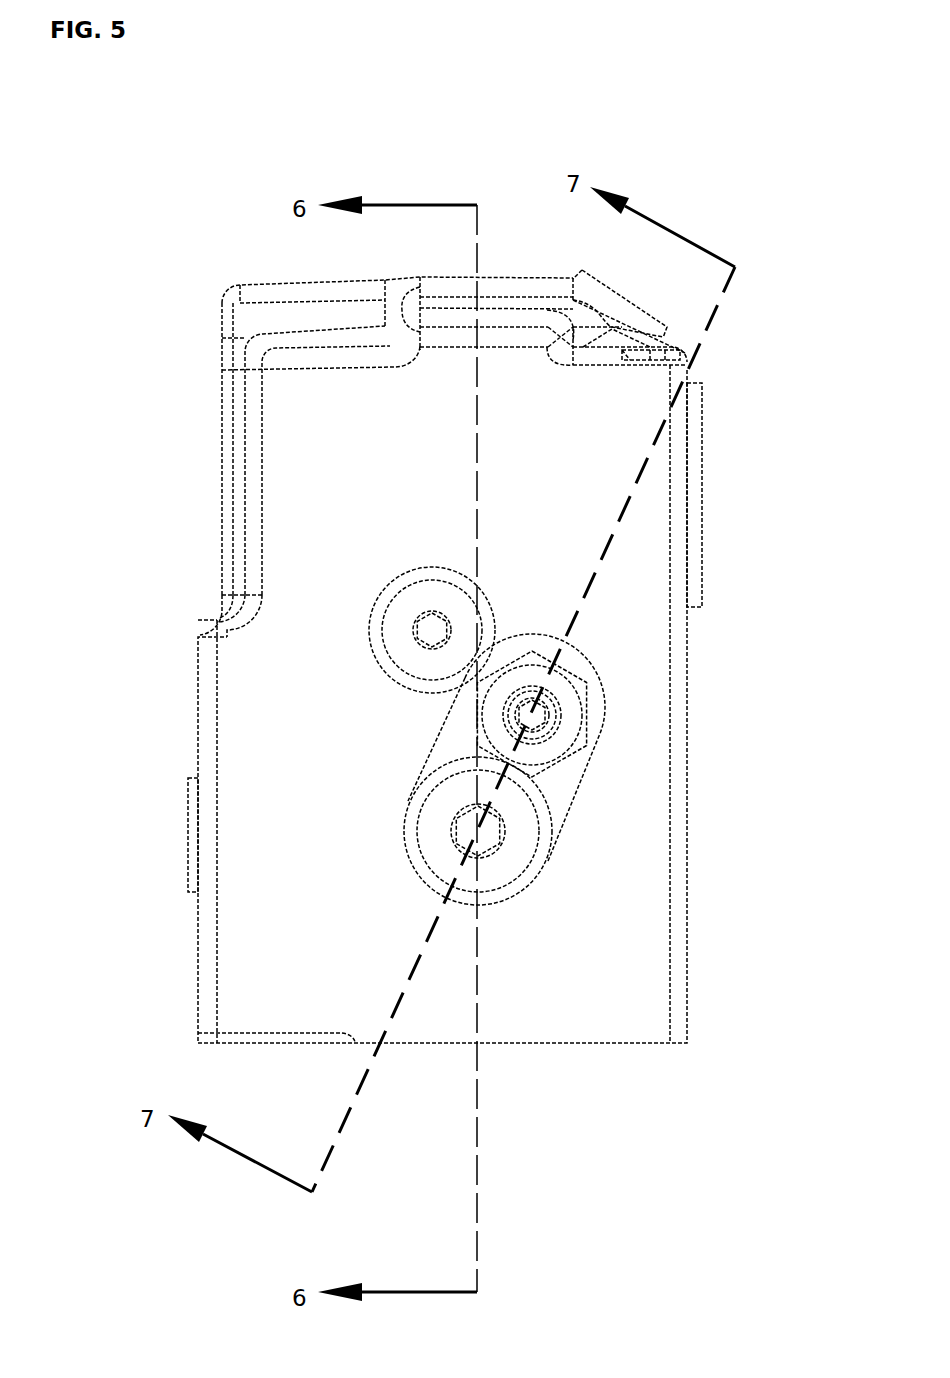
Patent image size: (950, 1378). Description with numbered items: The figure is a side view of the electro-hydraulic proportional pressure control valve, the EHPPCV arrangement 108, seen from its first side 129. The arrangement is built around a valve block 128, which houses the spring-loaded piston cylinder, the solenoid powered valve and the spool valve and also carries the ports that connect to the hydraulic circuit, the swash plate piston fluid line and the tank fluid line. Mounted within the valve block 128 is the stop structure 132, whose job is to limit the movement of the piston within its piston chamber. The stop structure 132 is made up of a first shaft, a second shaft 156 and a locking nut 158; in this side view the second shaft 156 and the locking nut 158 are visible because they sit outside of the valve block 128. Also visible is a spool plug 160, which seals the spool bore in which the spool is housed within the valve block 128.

The EHPPCV arrangement 108 is at (739, 91).
The valve block 128 is at (277, 470).
The first side 129 is at (168, 384).
The stop structure 132 is at (612, 701).
The second shaft 156 is at (547, 700).
The locking nut 158 is at (568, 733).
The spool plug 160 is at (518, 875).